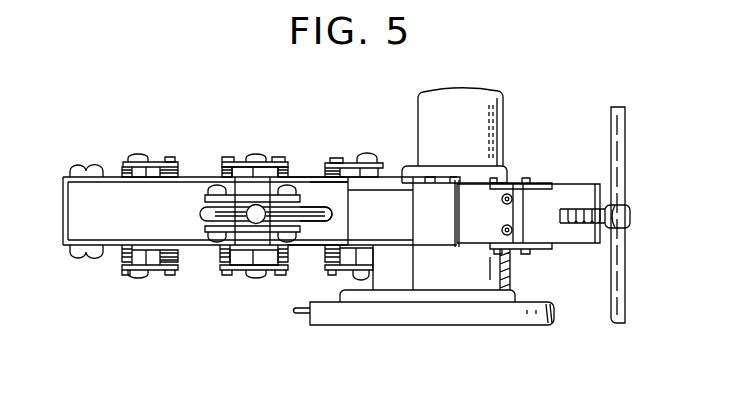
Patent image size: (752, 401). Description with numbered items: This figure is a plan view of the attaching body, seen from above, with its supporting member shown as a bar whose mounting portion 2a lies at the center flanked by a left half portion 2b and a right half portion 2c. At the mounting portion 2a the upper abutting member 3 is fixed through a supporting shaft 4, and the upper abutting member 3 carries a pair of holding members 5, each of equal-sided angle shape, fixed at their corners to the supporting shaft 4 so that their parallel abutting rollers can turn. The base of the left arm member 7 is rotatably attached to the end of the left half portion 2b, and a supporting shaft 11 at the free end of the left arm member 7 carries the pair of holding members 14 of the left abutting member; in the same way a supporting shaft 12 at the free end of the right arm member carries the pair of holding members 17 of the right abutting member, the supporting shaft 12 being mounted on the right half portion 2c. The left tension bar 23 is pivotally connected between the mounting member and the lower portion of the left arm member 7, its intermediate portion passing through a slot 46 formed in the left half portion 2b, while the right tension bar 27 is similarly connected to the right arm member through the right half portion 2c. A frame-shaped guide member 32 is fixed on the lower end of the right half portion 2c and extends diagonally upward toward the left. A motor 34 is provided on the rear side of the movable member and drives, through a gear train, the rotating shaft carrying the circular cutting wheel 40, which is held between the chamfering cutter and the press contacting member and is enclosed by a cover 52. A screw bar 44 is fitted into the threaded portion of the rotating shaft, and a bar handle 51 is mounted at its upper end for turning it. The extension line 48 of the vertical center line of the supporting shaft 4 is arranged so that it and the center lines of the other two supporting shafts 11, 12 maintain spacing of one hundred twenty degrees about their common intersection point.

The mounting portion 2a is at (290, 177).
The left half portion 2b is at (118, 226).
The right half portion 2c is at (370, 181).
The upper abutting member 3 is at (240, 157).
The supporting shaft 4 is at (260, 157).
The holding members 5 is at (223, 176).
The left arm member 7 is at (108, 255).
The supporting shaft 11 is at (133, 156).
The supporting shaft 12 is at (373, 157).
The holding members 14 is at (153, 161).
The holding members 17 is at (353, 162).
The left tension bar 23 is at (199, 222).
The right tension bar 27 is at (316, 193).
The guide member 32 is at (397, 228).
The motor 34 is at (505, 107).
The cutting wheel 40 is at (304, 316).
The screw bar 44 is at (592, 208).
The slot 46 is at (195, 208).
The extension line 48 is at (318, 224).
The bar handle 51 is at (625, 142).
The cover 52 is at (522, 319).